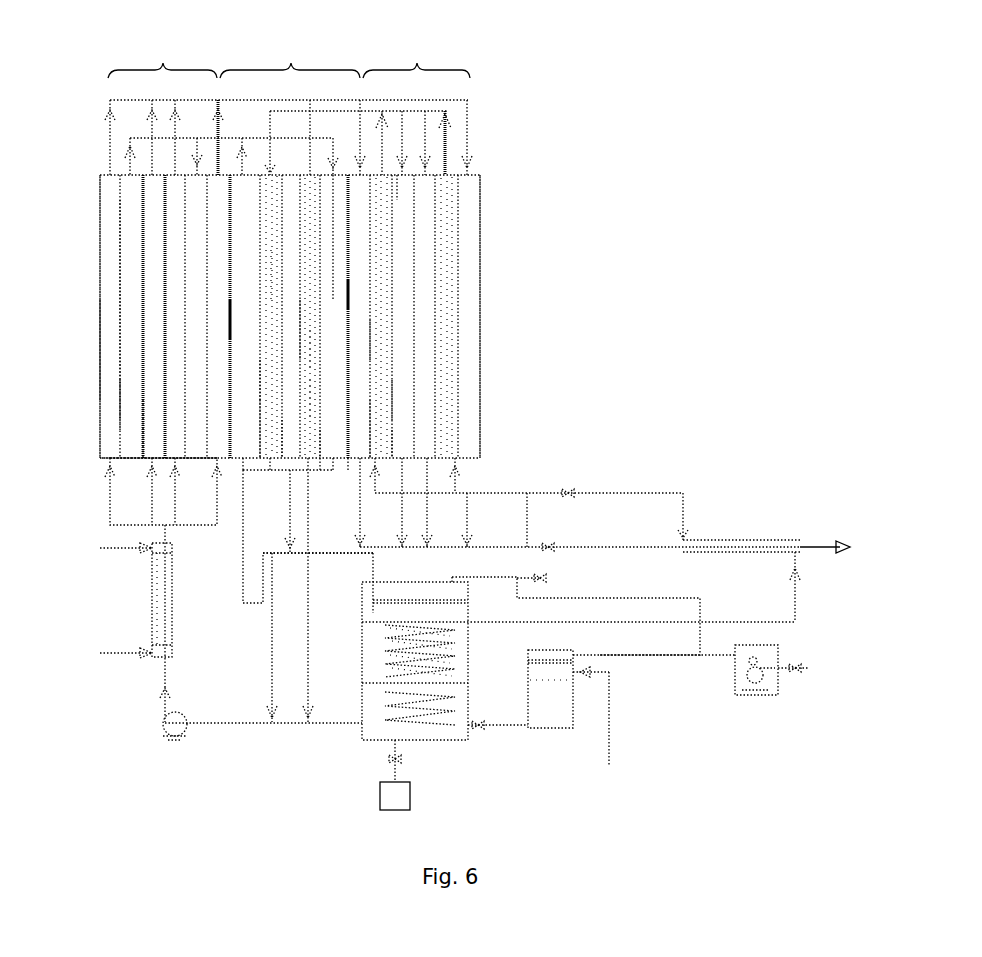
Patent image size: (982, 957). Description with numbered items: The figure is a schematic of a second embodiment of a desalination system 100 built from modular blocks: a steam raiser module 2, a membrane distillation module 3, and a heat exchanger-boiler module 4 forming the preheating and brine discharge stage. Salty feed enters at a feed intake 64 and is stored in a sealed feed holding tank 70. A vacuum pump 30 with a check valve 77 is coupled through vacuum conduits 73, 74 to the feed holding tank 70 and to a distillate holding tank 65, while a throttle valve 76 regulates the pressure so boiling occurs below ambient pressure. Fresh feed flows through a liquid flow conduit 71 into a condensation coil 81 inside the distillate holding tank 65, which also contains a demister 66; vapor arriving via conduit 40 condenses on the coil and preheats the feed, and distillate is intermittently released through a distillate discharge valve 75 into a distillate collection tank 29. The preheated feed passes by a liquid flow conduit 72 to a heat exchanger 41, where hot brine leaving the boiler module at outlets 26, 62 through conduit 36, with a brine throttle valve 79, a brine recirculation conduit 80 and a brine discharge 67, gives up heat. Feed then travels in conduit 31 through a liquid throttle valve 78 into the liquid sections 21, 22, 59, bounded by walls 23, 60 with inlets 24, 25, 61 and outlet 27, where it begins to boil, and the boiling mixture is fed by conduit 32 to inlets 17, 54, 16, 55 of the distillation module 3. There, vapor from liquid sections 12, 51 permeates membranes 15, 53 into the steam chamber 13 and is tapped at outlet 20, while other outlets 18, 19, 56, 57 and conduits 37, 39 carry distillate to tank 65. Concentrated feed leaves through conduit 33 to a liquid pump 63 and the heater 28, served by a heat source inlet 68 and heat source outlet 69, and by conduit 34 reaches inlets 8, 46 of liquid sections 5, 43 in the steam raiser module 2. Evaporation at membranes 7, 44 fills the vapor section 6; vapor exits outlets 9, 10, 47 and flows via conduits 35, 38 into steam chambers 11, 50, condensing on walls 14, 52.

The steam raiser module 2 is at (162, 56).
The membrane distillation module 3 is at (290, 56).
The heat exchanger-boiler module 4 is at (416, 56).
The liquid section 5 is at (100, 354).
The vapor/steam section 6 is at (130, 402).
The membrane 7 is at (120, 290).
The inlet 8 is at (110, 460).
The outlet 9 is at (110, 174).
The outlet 10 is at (131, 177).
The steam/vapor chamber 11 is at (242, 320).
The liquid section 12 is at (262, 388).
The steam/vapor chamber 13 is at (280, 316).
The wall 14 is at (260, 440).
The membrane 15 is at (282, 288).
The inlet 16 is at (242, 178).
The inlet 17 is at (270, 175).
The outlet 18 is at (243, 462).
The outlet 19 is at (270, 462).
The outlet 20 is at (282, 450).
The liquid section 21 is at (359, 295).
The liquid section 22 is at (380, 340).
The wall 23 is at (370, 422).
The inlet 24 is at (360, 178).
The inlet 25 is at (376, 465).
The outlet 26 is at (348, 462).
The outlet 27 is at (380, 175).
The heater 28 is at (174, 648).
The distillate collection tank 29 is at (410, 804).
The vacuum pump 30 is at (748, 697).
The conduit 31 is at (645, 492).
The conduit 32 is at (447, 134).
The conduit 33 is at (308, 655).
The conduit 34 is at (170, 530).
The conduit 35 is at (236, 100).
The conduit 36 is at (612, 546).
The conduit 37 is at (292, 505).
The conduit 38 is at (221, 138).
The conduit 39 is at (242, 602).
The conduit 40 is at (375, 556).
The heat exchanger 41 is at (737, 540).
The liquid section 43 is at (150, 318).
The membrane 44 is at (143, 440).
The inlet 46 is at (150, 462).
The outlet 47 is at (148, 178).
The steam/vapor chamber 50 is at (322, 316).
The liquid section 51 is at (318, 352).
The wall 52 is at (318, 404).
The membrane 53 is at (300, 345).
The inlet 54 is at (313, 173).
The inlet 55 is at (333, 178).
The outlet 56 is at (318, 462).
The outlet 57 is at (320, 455).
The liquid section 59 is at (390, 316).
The wall 60 is at (392, 402).
The inlet 61 is at (397, 178).
The outlet 62 is at (392, 452).
The liquid pump 63 is at (175, 727).
The feed intake 64 is at (611, 740).
The distillate holding tank 65 is at (362, 722).
The demister 66 is at (370, 600).
The brine discharge 67 is at (850, 550).
The heat source inlet 68 is at (98, 552).
The heat source outlet 69 is at (98, 656).
The feed holding tank 70 is at (550, 728).
The liquid flow conduit 71 is at (486, 720).
The liquid flow conduit 72 is at (797, 606).
The vacuum conduit 73 is at (652, 598).
The vacuum conduit 74 is at (676, 658).
The distillate discharge valve 75 is at (400, 758).
The throttle valve 76 is at (546, 576).
The check valve 77 is at (790, 674).
The liquid throttle valve 78 is at (568, 496).
The brine throttle valve 79 is at (547, 543).
The brine recirculation conduit 80 is at (527, 497).
The heating coil 81 is at (462, 652).
The desalination system 100 is at (702, 150).